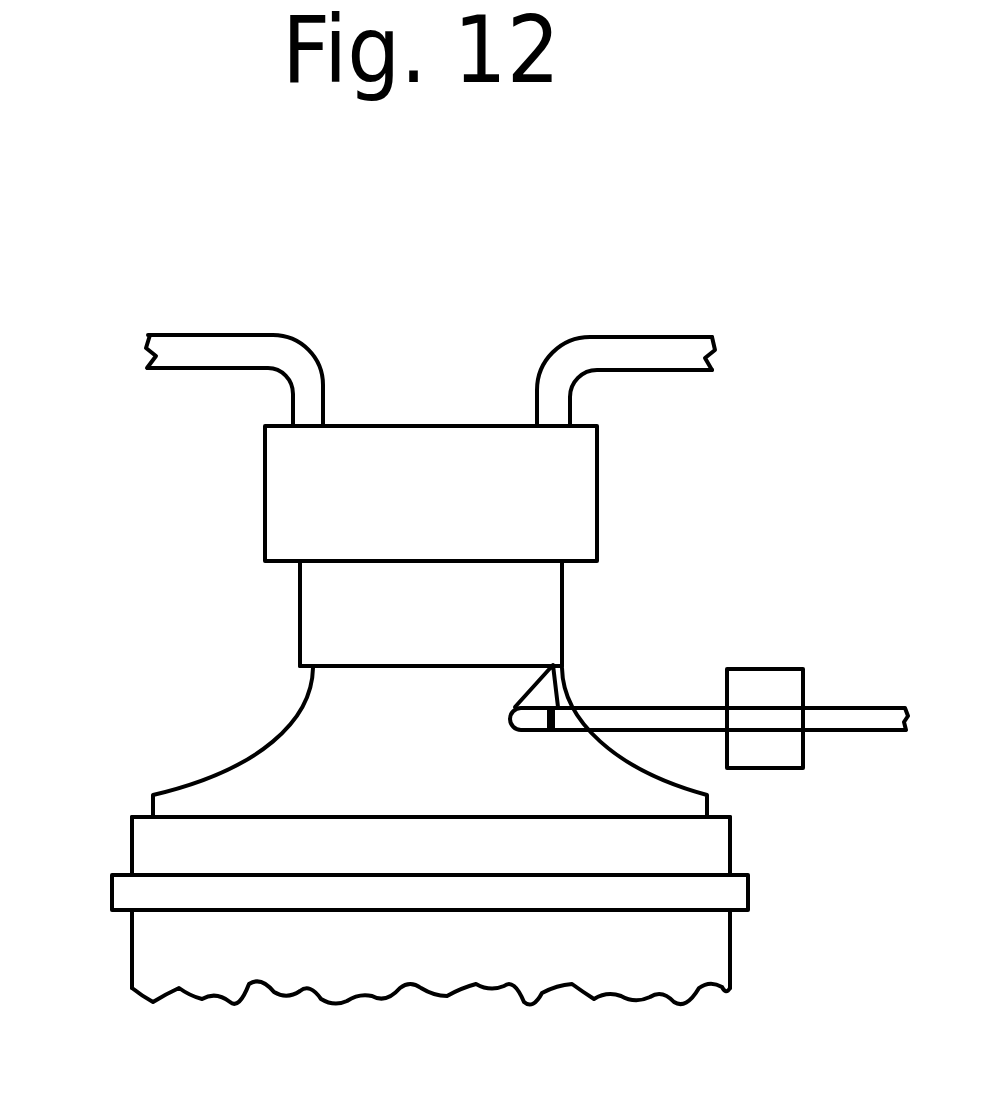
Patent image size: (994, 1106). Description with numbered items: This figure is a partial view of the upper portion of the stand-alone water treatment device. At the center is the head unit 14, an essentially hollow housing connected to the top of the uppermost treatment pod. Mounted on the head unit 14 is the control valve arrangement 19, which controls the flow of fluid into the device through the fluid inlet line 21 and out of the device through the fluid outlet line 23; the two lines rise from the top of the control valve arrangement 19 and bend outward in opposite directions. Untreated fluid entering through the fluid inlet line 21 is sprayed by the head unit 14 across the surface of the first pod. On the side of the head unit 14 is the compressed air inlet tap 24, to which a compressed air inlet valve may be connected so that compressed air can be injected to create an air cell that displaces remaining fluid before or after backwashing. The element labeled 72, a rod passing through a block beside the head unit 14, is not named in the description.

The head unit 14 is at (260, 783).
The control valve arrangement 19 is at (575, 470).
The fluid inlet line 21 is at (202, 353).
The fluid outlet line 23 is at (652, 355).
The compressed air inlet tap 24 is at (553, 660).
The actuator rod with slider block 72 is at (777, 697).